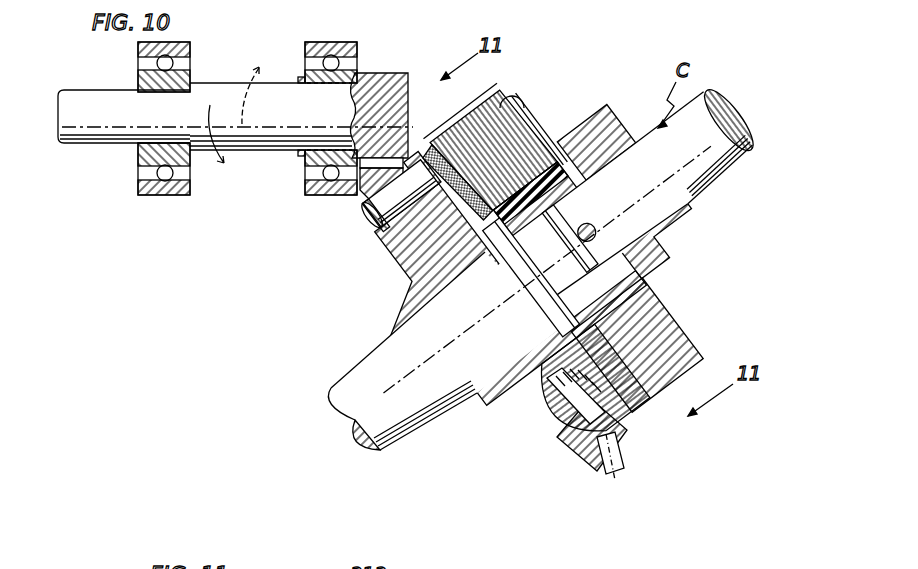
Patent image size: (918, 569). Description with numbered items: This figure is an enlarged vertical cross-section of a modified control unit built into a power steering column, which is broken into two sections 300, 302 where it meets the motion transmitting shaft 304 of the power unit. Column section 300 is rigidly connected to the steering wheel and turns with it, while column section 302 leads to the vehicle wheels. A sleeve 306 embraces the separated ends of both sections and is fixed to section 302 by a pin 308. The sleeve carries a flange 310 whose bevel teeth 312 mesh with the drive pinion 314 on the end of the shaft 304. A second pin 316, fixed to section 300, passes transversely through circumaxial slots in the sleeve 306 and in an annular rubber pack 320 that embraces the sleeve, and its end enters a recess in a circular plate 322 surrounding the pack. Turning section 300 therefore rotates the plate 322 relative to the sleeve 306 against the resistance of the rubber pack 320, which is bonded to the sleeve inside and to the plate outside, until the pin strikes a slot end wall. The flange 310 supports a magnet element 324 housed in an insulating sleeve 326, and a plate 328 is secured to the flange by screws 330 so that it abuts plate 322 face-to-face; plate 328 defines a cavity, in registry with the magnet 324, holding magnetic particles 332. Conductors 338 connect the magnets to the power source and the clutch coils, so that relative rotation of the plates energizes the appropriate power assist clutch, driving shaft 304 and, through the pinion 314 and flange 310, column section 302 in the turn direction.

The steering column section 300 is at (742, 160).
The steering column section 302 is at (401, 430).
The motion transmitting shaft 304 is at (225, 86).
The sleeve 306 is at (583, 152).
The pin 308 is at (508, 276).
The flange 310 is at (577, 442).
The bevel teeth 312 is at (612, 456).
The drive pinion 314 is at (396, 73).
The pin 316 is at (589, 226).
The annular rubber pack 320 is at (548, 157).
The plate 322 is at (512, 112).
The magnet element 324 is at (388, 233).
The insulating sleeve 326 is at (364, 216).
The plate 328 is at (614, 407).
The screws 330 is at (533, 417).
The magnetic particles 332 is at (481, 96).
The conductors 338 is at (514, 90).